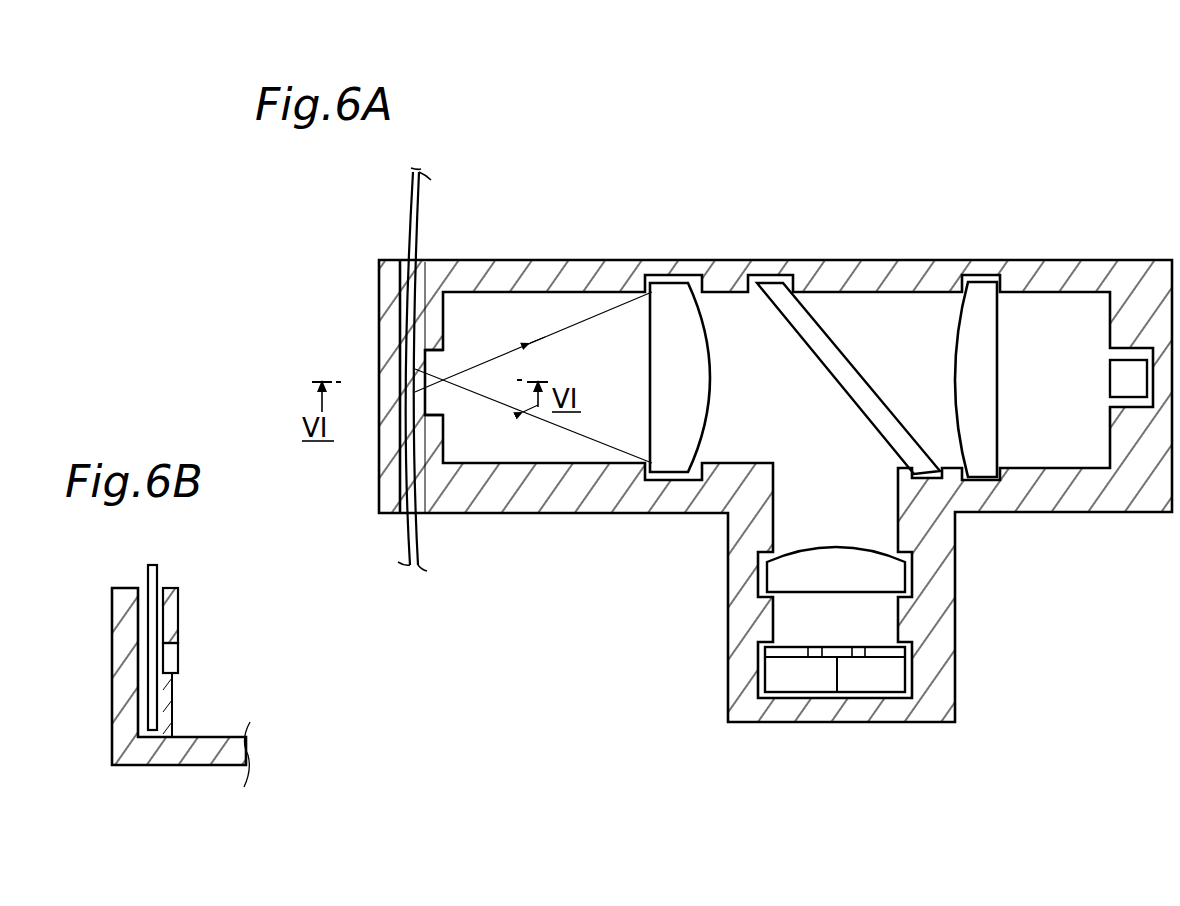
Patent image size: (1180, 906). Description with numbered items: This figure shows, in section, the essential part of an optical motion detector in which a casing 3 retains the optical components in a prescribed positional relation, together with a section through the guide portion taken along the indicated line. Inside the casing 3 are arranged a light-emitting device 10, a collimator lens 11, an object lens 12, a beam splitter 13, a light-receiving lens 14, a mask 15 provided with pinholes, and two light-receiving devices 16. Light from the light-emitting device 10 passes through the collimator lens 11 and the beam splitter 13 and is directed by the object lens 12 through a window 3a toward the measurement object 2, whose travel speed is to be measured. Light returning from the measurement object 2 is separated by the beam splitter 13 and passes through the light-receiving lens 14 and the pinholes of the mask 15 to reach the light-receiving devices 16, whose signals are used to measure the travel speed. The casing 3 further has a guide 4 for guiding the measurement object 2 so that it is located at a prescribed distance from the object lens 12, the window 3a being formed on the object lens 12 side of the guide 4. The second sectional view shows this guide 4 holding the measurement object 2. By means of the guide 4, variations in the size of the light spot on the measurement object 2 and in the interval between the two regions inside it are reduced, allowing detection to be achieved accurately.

In FIG. 6A, the measurement object 2 is at (410, 183).
In FIG. 6B, the measurement object 2 is at (148, 575).
In FIG. 6A, the casing 3 is at (728, 567).
In FIG. 6A, the window 3a is at (435, 360).
In FIG. 6B, the guide 4 is at (128, 660).
In FIG. 6A, the light-emitting device 10 is at (1130, 378).
In FIG. 6A, the collimator lens 11 is at (975, 322).
In FIG. 6A, the object lens 12 is at (688, 328).
In FIG. 6A, the beam splitter 13 is at (823, 342).
In FIG. 6A, the light-receiving lens 14 is at (880, 577).
In FIG. 6A, the mask 15 is at (795, 650).
In FIG. 6A, the light-receiving devices 16 is at (790, 678).